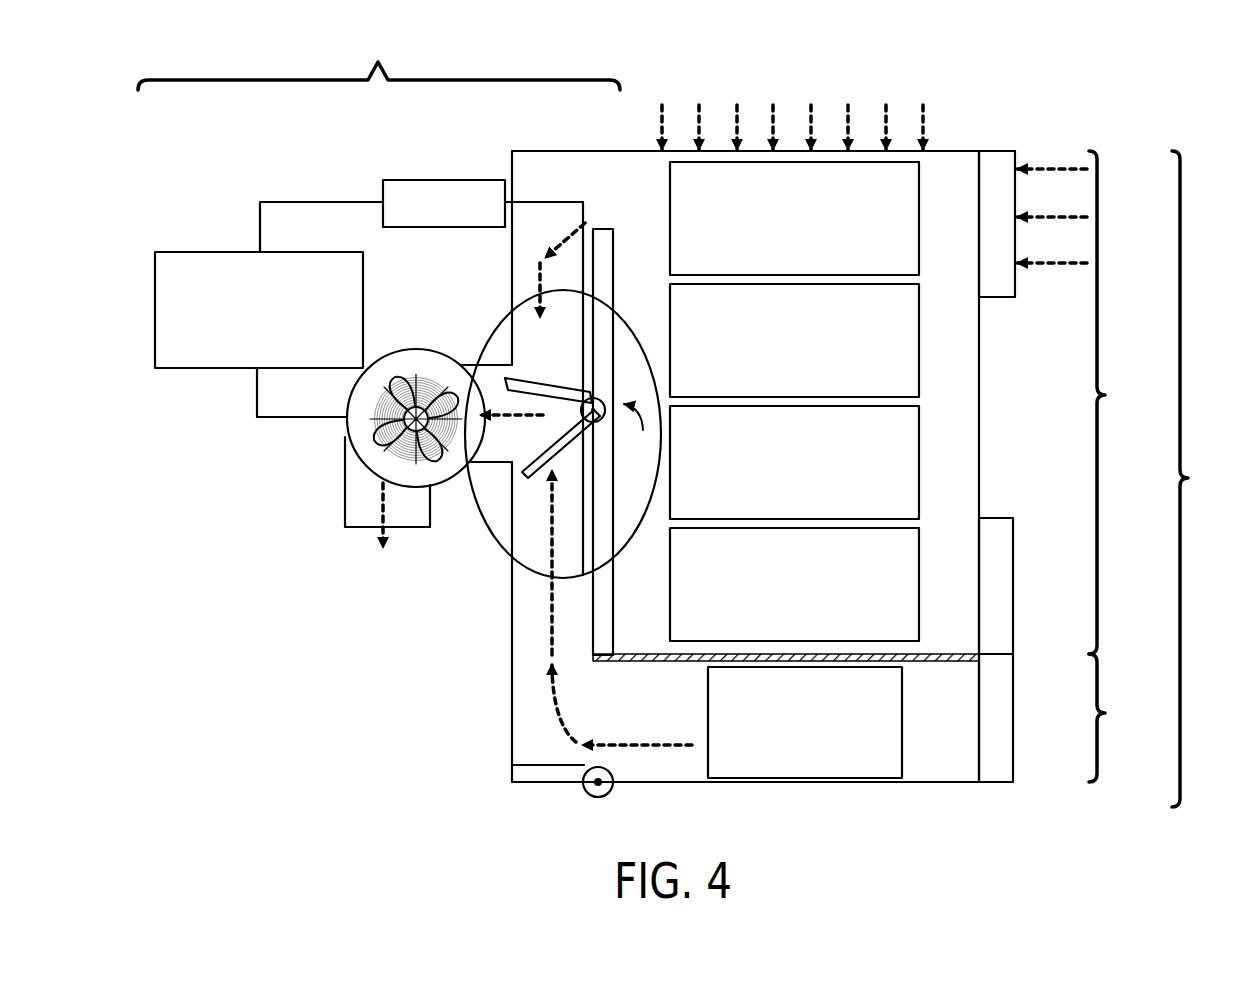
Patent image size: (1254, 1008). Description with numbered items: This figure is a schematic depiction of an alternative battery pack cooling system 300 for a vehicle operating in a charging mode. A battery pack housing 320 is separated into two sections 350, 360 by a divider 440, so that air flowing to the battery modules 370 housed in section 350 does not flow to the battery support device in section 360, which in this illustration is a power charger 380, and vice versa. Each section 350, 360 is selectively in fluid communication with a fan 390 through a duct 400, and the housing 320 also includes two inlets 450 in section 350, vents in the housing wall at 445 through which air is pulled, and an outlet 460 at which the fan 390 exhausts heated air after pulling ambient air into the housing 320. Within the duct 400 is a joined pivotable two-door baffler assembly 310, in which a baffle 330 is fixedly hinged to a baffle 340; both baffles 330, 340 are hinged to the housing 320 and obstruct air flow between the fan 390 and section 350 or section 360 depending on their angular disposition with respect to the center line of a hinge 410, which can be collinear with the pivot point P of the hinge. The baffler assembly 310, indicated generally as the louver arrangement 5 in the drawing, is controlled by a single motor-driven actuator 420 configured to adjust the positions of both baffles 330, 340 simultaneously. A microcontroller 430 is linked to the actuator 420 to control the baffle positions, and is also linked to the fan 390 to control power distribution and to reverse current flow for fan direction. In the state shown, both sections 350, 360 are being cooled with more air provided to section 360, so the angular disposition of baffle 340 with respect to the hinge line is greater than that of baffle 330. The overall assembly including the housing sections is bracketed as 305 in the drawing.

The battery pack cooling system 300 is at (379, 58).
The solar power assembly 305 is at (1210, 479).
The pivotable baffler assembly 310 is at (642, 430).
The battery pack housing 320 is at (948, 150).
The baffle 330 is at (524, 381).
The baffle 340 is at (562, 445).
The section 350 is at (1131, 402).
The section 360 is at (1126, 718).
The battery modules 370 is at (919, 230).
The power charger 380 is at (902, 735).
The fan 390 is at (378, 436).
The duct 400 is at (512, 287).
The hinge 410 is at (605, 411).
The actuator 420 is at (398, 183).
The microcontroller 430 is at (175, 262).
The divider 440 is at (642, 653).
The vents 445 is at (792, 150).
The inlets 450 is at (990, 287).
The outlet 460 is at (1013, 735).
The louver assembly 5 is at (493, 552).
The pivot point P is at (604, 402).